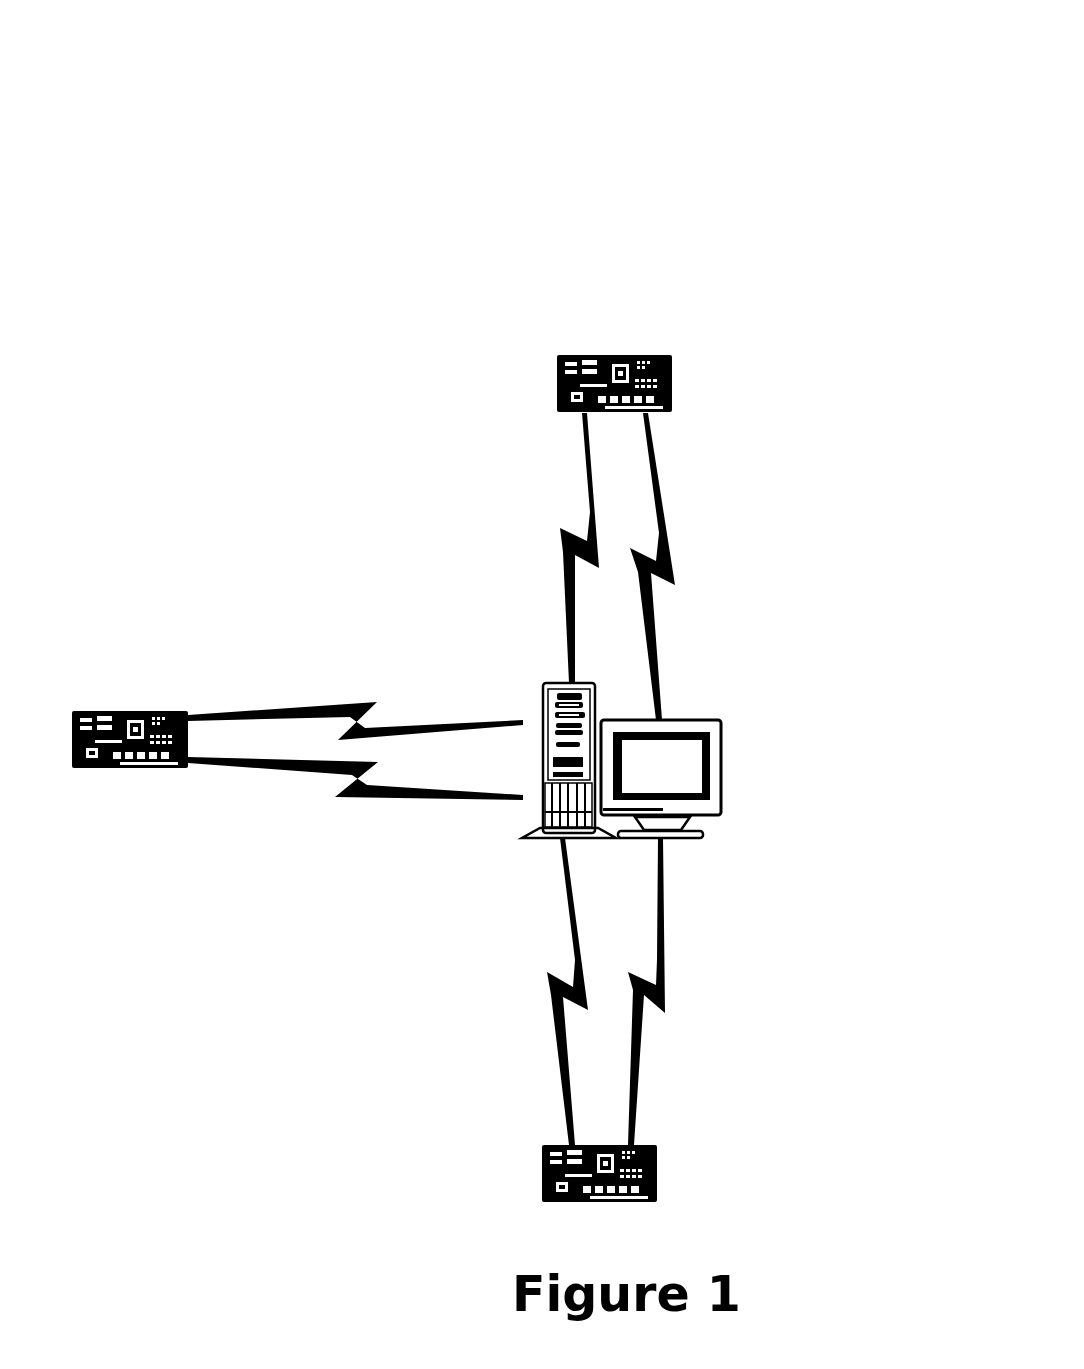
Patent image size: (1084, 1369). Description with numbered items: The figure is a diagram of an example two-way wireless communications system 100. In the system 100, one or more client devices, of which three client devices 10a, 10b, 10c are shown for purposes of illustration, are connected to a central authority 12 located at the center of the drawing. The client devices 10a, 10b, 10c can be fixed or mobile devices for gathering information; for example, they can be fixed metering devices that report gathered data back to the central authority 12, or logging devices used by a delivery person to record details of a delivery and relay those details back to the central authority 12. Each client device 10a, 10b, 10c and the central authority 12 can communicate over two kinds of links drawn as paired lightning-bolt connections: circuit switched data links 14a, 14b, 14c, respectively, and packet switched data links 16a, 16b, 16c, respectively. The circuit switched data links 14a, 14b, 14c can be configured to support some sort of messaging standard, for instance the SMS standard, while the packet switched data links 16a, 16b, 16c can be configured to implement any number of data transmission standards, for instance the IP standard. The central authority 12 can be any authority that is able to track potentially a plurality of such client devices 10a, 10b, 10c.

The two-way wireless communications system 100 is at (652, 285).
The client device 10a is at (614, 408).
The client device 10b is at (130, 763).
The client device 10c is at (599, 1197).
The central authority 12 is at (621, 783).
The circuit switched data link 14a is at (551, 548).
The circuit switched data link 14b is at (355, 693).
The circuit switched data link 14c is at (539, 991).
The packet switched data link 16a is at (679, 566).
The packet switched data link 16b is at (355, 806).
The packet switched data link 16c is at (674, 991).